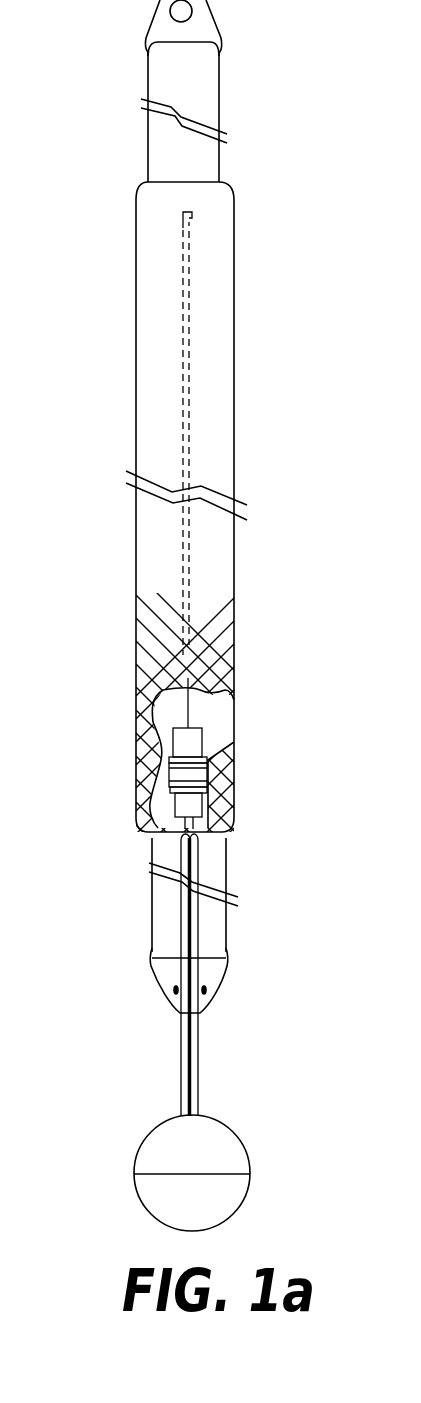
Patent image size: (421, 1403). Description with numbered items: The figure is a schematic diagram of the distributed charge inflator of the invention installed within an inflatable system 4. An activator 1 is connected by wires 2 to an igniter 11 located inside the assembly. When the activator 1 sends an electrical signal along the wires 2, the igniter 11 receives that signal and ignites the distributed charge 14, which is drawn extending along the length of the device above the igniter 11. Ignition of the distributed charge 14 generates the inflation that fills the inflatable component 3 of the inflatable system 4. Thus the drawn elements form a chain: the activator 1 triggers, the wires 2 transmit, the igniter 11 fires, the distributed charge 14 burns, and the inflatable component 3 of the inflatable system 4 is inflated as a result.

The activator 1 is at (134, 1175).
The wires 2 is at (181, 1087).
The inflatable component 3 is at (237, 632).
The inflatable system 4 is at (137, 720).
The igniter 11 is at (207, 803).
The distributed charge 14 is at (188, 380).